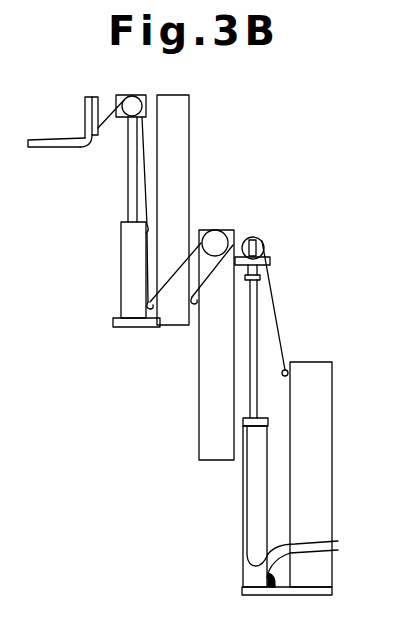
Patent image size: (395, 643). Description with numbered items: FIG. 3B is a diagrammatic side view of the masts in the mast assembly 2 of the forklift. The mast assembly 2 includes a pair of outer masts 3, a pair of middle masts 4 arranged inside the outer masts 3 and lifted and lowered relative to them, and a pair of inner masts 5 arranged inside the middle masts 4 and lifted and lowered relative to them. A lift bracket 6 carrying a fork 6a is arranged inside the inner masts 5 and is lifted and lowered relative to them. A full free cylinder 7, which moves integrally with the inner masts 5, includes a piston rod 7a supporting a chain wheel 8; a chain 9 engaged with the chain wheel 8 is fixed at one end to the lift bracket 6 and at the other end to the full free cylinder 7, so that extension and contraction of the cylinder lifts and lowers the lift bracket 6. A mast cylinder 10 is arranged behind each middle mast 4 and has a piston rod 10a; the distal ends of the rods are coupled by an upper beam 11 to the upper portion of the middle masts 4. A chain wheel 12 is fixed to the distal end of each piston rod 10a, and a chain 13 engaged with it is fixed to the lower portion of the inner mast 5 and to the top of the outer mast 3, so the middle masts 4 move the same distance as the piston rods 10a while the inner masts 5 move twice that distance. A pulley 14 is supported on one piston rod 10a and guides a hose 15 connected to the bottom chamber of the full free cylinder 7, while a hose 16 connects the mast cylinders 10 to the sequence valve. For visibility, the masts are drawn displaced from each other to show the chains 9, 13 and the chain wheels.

The mast assembly 2 is at (297, 195).
The outer mast 3 is at (328, 480).
The middle mast 4 is at (206, 428).
The inner mast 5 is at (182, 155).
The lift bracket 6 is at (85, 103).
The fork 6a is at (60, 146).
The full free cylinder 7 is at (125, 273).
The piston rod 7a is at (128, 198).
The chain wheel 8 is at (123, 110).
The chain 9 is at (145, 137).
The mast cylinder 10 is at (247, 505).
The piston rod 10a is at (258, 320).
The upper beam 11 is at (271, 262).
The chain wheel 12 is at (262, 237).
The chain 13 is at (275, 294).
The pulley 14 is at (215, 237).
The hose 15 is at (176, 283).
The hose 16 is at (317, 553).